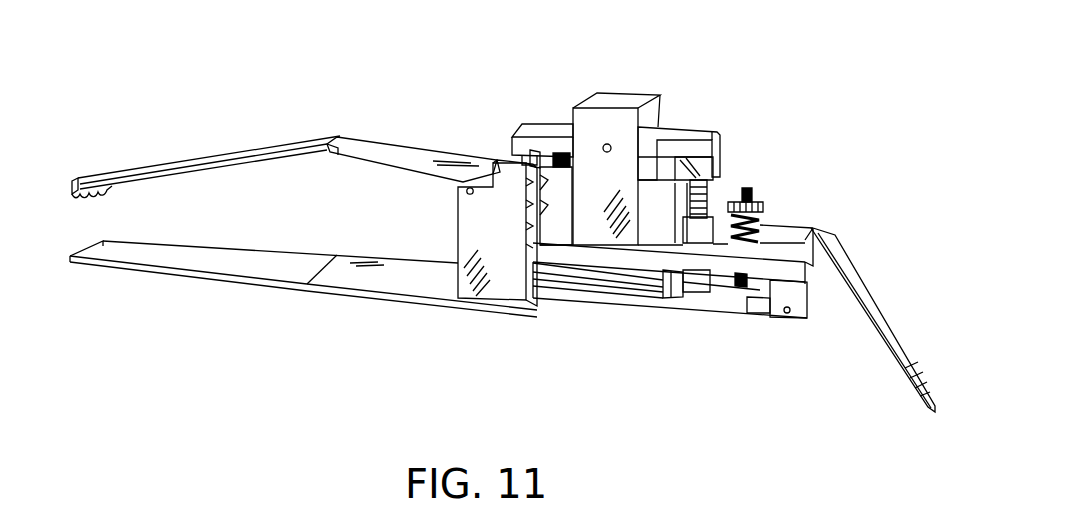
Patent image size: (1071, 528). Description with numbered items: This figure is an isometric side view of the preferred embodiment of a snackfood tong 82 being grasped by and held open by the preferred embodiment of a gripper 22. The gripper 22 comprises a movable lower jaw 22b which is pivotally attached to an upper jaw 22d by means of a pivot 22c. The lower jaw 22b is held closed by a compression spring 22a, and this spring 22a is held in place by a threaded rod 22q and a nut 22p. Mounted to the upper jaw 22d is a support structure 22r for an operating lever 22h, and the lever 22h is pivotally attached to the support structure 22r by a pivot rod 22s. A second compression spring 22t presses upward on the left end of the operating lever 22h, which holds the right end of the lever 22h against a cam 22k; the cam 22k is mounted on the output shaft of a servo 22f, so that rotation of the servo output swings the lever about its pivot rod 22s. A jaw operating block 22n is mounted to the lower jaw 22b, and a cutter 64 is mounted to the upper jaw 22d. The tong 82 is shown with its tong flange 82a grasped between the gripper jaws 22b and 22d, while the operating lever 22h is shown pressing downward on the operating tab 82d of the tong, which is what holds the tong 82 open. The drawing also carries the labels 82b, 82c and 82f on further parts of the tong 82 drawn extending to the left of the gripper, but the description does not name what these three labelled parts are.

The gripper 22 is at (756, 327).
The compression spring 22a is at (767, 231).
The movable lower jaw 22b is at (608, 298).
The pivot 22c is at (791, 314).
The upper jaw 22d is at (579, 265).
The servo 22f is at (692, 158).
The operating lever 22h is at (515, 148).
The cam 22k is at (710, 193).
The jaw operating block 22n is at (695, 292).
The nut 22p is at (763, 210).
The threaded rod 22q is at (755, 192).
The support structure 22r is at (582, 137).
The pivot rod 22s is at (606, 144).
The compression spring 22t is at (560, 156).
The cutter 64 is at (870, 288).
The snackfood tong 82 is at (300, 296).
The tong flange 82a is at (647, 292).
The upper jaw 82b is at (372, 145).
The lower jaw 82c is at (387, 280).
The operating tab 82d is at (513, 152).
The pivot hole 82f is at (461, 191).